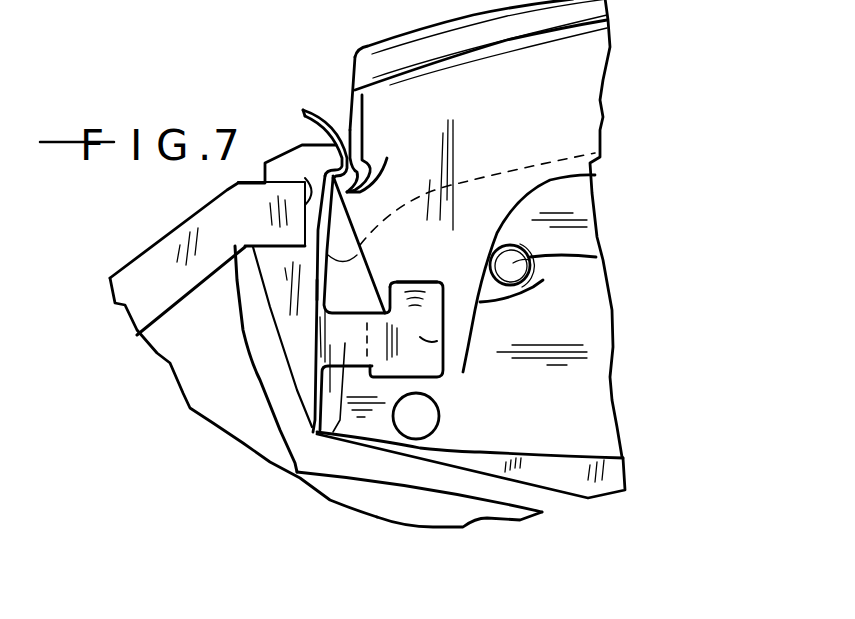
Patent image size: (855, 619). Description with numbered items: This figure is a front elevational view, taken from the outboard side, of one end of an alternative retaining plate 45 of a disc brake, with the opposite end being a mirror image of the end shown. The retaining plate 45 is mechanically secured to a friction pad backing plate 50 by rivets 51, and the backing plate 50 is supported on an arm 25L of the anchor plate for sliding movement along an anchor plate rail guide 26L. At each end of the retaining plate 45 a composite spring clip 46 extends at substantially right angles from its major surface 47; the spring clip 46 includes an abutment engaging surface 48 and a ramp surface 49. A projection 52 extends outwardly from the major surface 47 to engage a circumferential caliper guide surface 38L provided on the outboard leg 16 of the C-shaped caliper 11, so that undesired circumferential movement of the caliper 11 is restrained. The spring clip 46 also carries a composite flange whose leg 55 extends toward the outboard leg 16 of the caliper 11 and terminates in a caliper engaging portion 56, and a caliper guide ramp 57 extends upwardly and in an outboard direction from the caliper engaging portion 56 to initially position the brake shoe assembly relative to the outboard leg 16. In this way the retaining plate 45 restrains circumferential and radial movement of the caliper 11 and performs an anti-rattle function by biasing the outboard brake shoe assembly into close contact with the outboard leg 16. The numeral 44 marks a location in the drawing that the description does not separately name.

The caliper 11 is at (606, 50).
The outboard leg 16 is at (553, 118).
The arm 25L is at (143, 248).
The anchor plate rail guide 26L is at (285, 157).
The caliper guide surface 38L is at (527, 280).
The weld seam 44 is at (210, 462).
The retaining plate 45 is at (615, 412).
The composite spring clip 46 is at (280, 263).
The major surface 47 is at (587, 413).
The abutment engaging surface 48 is at (387, 143).
The ramp surface 49 is at (330, 117).
The friction pad backing plate 50 is at (316, 290).
The rivet 51 is at (417, 415).
The projection 52 is at (596, 257).
The leg 55 is at (399, 499).
The caliper engaging portion 56 is at (437, 341).
The caliper guide ramp 57 is at (417, 290).